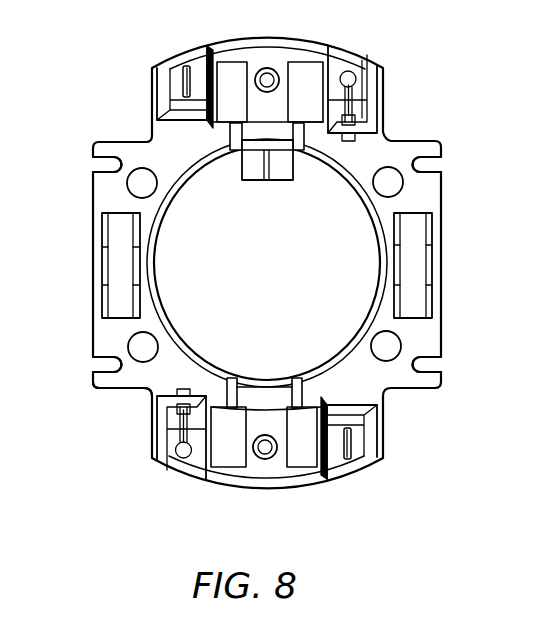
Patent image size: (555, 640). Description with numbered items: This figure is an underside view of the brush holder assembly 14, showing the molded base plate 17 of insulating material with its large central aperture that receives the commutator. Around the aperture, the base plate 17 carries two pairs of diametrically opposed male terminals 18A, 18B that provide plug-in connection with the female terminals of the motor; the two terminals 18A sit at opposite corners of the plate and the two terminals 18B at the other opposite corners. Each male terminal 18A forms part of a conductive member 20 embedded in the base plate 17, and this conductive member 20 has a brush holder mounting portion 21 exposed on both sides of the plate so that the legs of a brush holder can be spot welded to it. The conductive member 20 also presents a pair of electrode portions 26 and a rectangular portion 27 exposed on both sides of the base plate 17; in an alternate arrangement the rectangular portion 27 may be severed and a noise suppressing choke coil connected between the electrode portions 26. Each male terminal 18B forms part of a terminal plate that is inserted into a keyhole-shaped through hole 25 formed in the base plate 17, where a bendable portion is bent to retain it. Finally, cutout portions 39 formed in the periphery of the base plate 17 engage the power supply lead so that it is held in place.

The brush holder assembly 14 is at (122, 148).
The base plate 17 is at (110, 382).
The male terminal 18A is at (195, 72).
The male terminal 18B is at (330, 93).
The conductive member 20 is at (118, 302).
The brush holder mounting portion 21 is at (303, 72).
The keyhole-shaped through hole 25 is at (362, 72).
The electrode portions 26 is at (393, 185).
The rectangular portion 27 is at (417, 230).
The cutout portions 39 is at (102, 173).